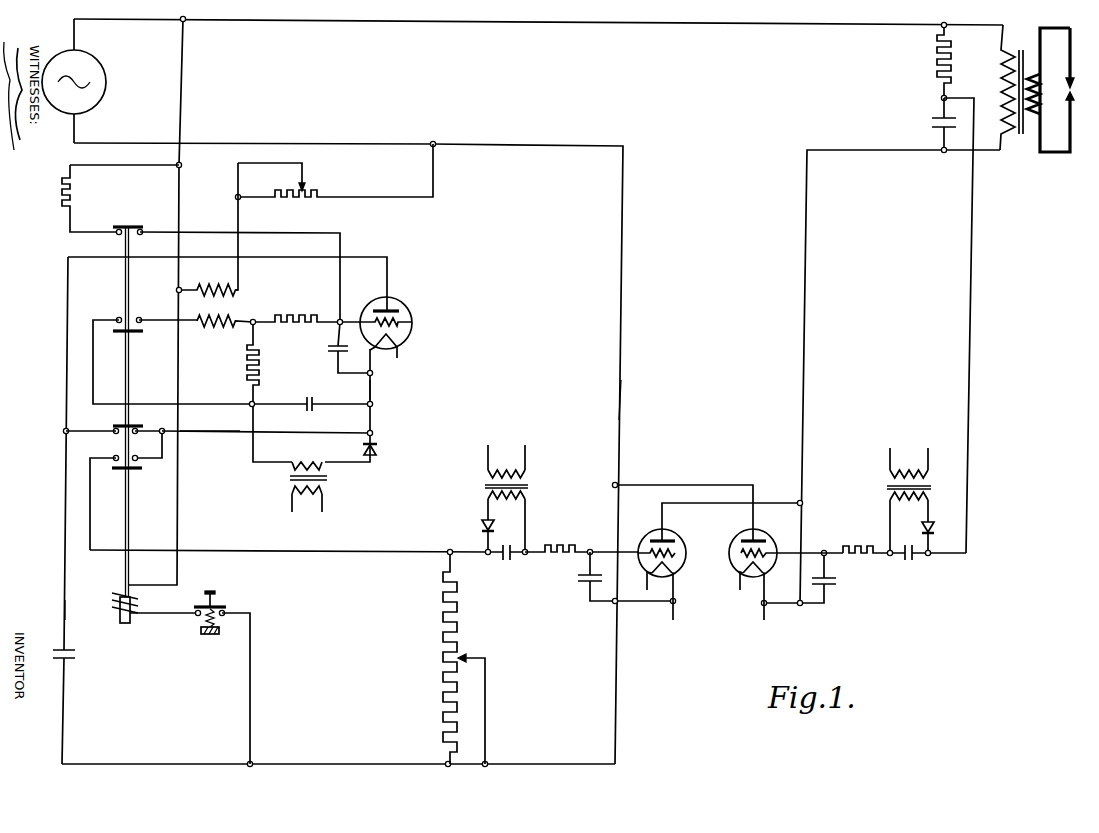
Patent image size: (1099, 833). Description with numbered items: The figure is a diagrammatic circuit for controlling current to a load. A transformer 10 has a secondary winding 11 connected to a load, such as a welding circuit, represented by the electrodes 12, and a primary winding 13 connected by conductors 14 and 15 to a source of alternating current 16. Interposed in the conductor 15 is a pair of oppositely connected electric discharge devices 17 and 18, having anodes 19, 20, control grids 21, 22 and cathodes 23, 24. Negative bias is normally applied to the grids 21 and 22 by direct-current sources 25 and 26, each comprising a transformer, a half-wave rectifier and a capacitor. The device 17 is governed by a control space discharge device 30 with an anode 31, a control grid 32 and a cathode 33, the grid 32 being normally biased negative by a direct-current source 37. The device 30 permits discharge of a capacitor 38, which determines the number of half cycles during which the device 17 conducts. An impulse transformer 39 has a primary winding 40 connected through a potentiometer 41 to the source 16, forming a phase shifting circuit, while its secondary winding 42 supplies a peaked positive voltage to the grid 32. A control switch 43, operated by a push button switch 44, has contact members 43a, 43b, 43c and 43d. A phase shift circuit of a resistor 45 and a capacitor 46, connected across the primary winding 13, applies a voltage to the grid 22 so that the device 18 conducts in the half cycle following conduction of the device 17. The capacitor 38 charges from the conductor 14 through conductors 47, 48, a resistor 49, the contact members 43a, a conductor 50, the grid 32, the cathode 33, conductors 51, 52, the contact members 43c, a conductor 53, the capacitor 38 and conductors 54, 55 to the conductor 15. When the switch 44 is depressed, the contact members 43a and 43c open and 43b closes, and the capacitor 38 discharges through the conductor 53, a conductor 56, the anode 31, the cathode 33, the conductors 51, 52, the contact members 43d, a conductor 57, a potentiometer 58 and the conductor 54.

The transformer 10 is at (1034, 19).
The secondary winding 11 is at (1045, 70).
The electrodes 12 is at (1071, 91).
The primary winding 13 is at (1001, 70).
The conductor 14 is at (619, 23).
The conductor 15 is at (562, 145).
The source of alternating current 16 is at (139, 65).
The electric discharge device 17 is at (700, 526).
The electric discharge device 18 is at (788, 523).
The anode 19 is at (677, 541).
The anode 20 is at (768, 541).
The control grid 21 is at (678, 553).
The control grid 22 is at (770, 553).
The cathode 23 is at (672, 567).
The cathode 24 is at (765, 569).
The direct-current source 25 is at (565, 526).
The direct-current source 26 is at (883, 527).
The control space discharge device 30 is at (445, 305).
The anode 31 is at (399, 309).
The control grid 32 is at (413, 324).
The cathode 33 is at (400, 338).
The direct-current source 37 is at (324, 455).
The capacitor 38 is at (71, 656).
The impulse transformer 39 is at (278, 303).
The primary winding 40 is at (203, 289).
The potentiometer 41 is at (311, 193).
The secondary winding 42 is at (218, 324).
The control switch 43 is at (157, 507).
The contact members 43a is at (124, 226).
The contact members 43b is at (137, 318).
The contact members 43c is at (136, 429).
The contact members 43d is at (135, 457).
The push button switch 44 is at (226, 608).
The resistor 45 is at (935, 58).
The capacitor 46 is at (934, 118).
The conductor 47 is at (183, 95).
The conductor 48 is at (133, 166).
The resistor 49 is at (72, 197).
The conductor 50 is at (311, 233).
The conductor 51 is at (372, 396).
The conductor 52 is at (220, 431).
The conductor 53 is at (66, 576).
The conductor 54 is at (342, 764).
The conductor 55 is at (622, 403).
The conductor 56 is at (368, 257).
The conductor 57 is at (382, 551).
The potentiometer 58 is at (458, 631).